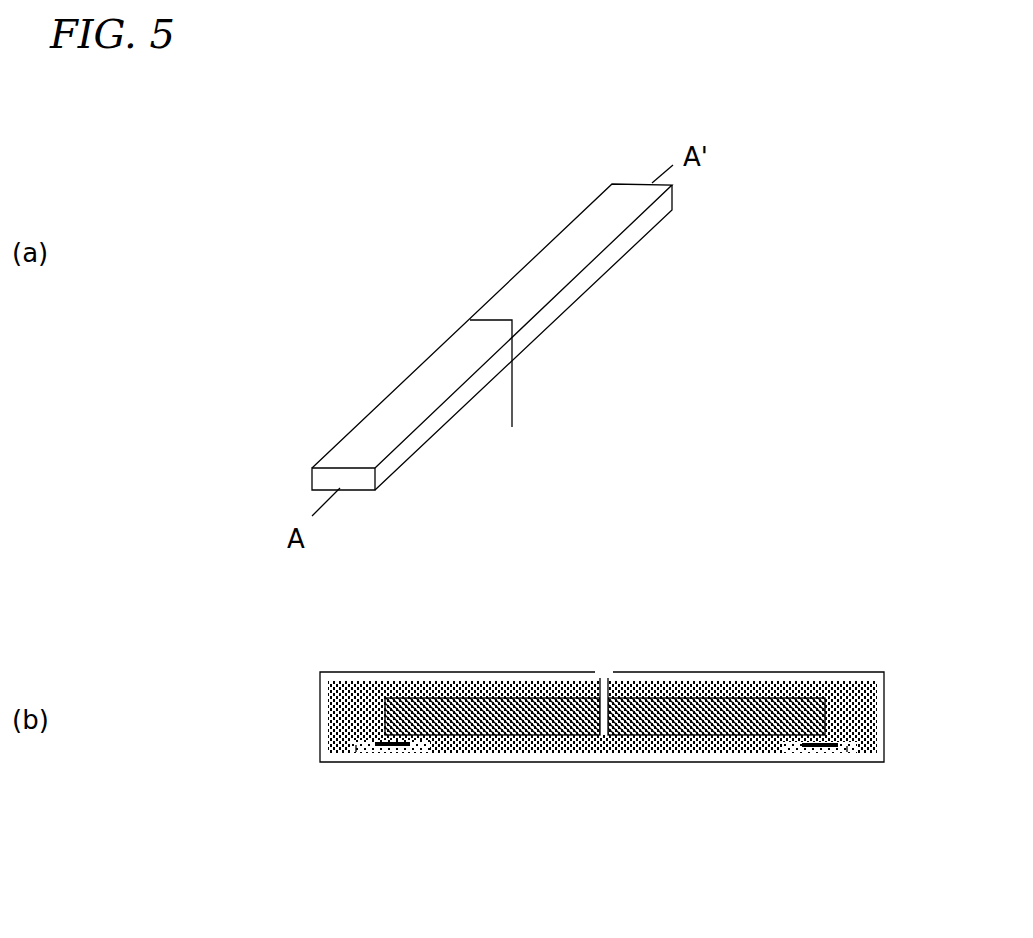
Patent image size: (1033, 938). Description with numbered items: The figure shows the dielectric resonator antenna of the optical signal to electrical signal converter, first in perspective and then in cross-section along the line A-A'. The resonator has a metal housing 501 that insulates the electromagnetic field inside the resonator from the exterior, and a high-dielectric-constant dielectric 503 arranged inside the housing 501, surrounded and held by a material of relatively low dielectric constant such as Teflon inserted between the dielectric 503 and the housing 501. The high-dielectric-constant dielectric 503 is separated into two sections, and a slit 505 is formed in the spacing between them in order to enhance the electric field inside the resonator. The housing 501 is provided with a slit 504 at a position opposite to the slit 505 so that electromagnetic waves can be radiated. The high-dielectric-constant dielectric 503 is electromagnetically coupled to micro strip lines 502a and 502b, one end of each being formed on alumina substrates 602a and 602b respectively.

The metal housing 501 is at (312, 478).
The high-dielectric-constant dielectric 503 is at (655, 683).
The slit 504 is at (512, 427).
The slit 505 is at (608, 680).
The micro strip line 502a is at (820, 745).
The micro strip line 502b is at (373, 741).
The alumina substrate 602a is at (847, 752).
The alumina substrate 602b is at (357, 752).